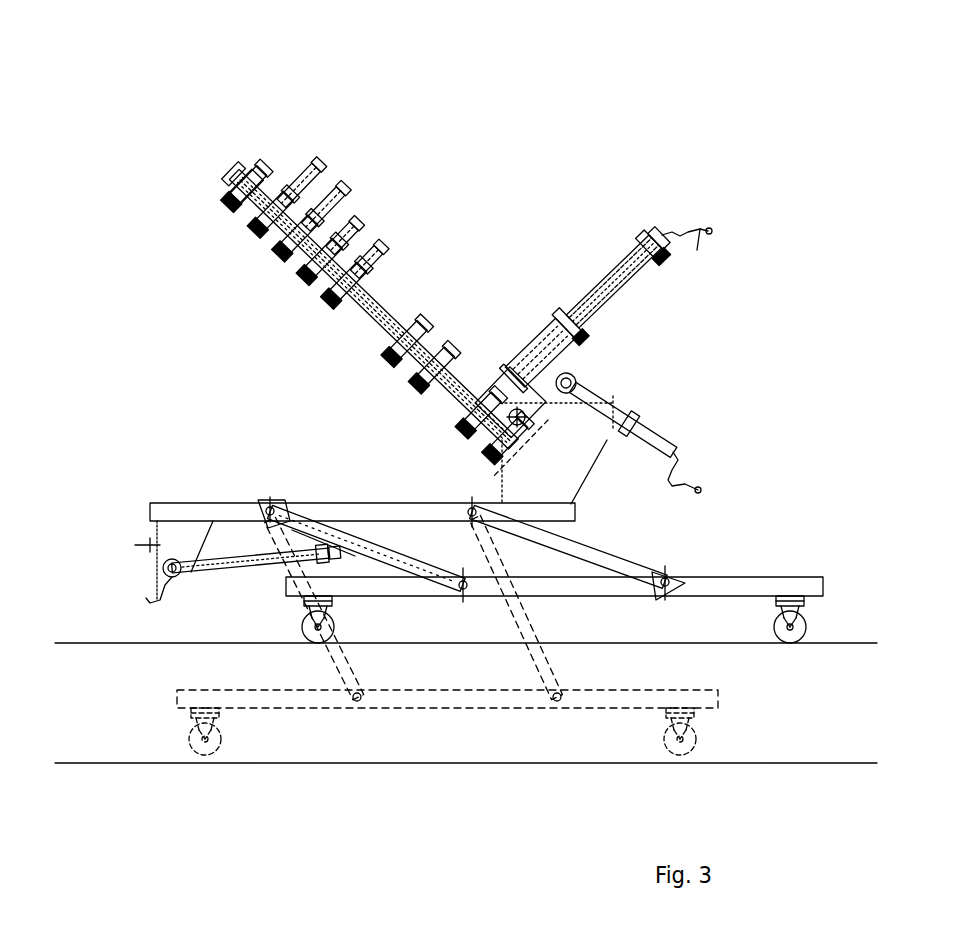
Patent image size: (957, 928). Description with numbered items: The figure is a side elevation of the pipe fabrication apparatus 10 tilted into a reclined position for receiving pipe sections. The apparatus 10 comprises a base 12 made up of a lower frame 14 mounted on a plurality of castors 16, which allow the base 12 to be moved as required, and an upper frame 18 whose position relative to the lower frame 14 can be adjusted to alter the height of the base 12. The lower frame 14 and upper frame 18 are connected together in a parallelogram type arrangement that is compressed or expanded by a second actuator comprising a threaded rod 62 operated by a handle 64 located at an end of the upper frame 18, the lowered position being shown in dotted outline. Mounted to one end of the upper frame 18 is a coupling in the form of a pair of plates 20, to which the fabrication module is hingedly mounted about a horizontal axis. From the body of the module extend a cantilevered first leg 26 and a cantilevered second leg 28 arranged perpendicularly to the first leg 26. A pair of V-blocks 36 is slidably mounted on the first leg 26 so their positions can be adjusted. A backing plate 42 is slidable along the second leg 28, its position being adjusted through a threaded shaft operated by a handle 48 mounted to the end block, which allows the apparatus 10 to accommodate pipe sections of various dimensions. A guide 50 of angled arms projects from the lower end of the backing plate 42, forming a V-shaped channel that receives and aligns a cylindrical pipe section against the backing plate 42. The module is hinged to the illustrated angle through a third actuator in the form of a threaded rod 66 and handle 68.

The pipe fabrication apparatus 10 is at (443, 104).
The base 12 is at (178, 501).
The lower frame 14 is at (795, 578).
The castors 16 is at (803, 626).
The upper frame 18 is at (362, 512).
The plates 20 is at (577, 462).
The first leg 26 is at (370, 323).
The second leg 28 is at (627, 296).
The V-blocks 36 is at (312, 165).
The backing plate 42 is at (538, 338).
The handle 48 is at (690, 234).
The guide 50 is at (481, 373).
The threaded rod 62 is at (240, 572).
The handle 64 is at (135, 547).
The threaded rod 66 is at (645, 430).
The handle 68 is at (674, 476).